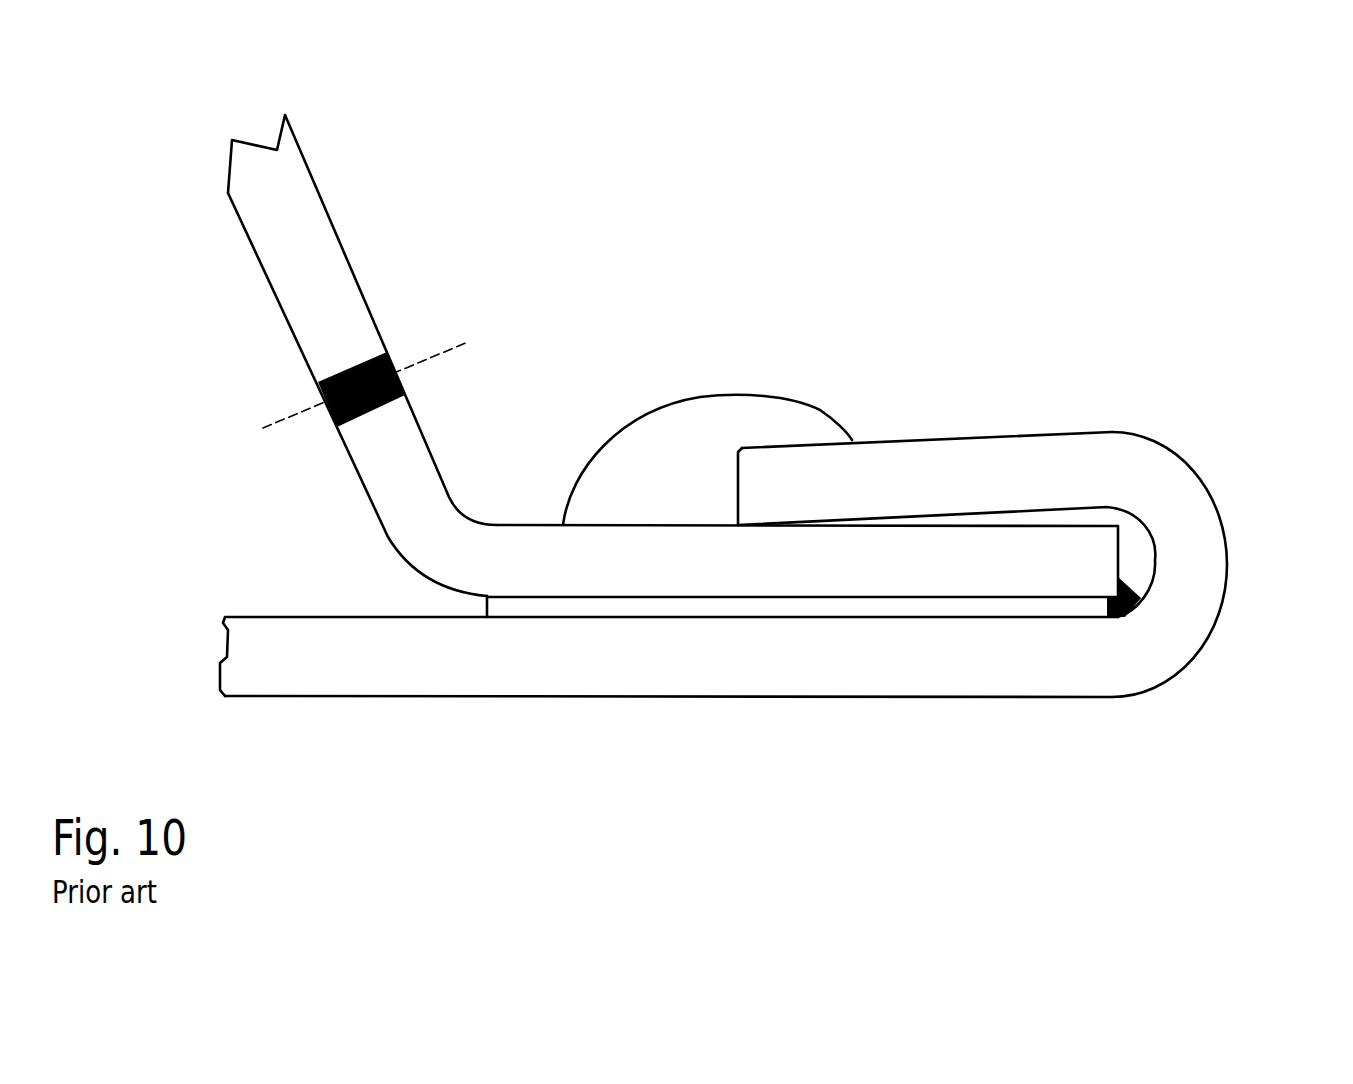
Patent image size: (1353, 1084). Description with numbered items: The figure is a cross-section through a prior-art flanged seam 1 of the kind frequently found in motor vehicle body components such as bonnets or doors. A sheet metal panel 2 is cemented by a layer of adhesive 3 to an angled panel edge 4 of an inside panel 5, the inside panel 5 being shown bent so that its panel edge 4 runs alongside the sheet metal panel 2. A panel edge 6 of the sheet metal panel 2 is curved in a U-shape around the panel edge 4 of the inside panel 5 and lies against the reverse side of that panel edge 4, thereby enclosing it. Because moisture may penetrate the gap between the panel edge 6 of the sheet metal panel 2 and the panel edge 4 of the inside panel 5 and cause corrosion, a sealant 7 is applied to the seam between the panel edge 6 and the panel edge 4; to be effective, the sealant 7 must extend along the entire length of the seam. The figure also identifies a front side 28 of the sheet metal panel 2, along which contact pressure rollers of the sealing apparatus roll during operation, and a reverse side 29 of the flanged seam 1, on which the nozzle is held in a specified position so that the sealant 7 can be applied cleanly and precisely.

The flanged seam 1 is at (1233, 343).
The sheet metal panel 2 is at (308, 668).
The layer of adhesive 3 is at (652, 607).
The panel edge 4 is at (858, 558).
The inside panel 5 is at (298, 228).
The panel edge 6 is at (1022, 467).
The sealant 7 is at (660, 442).
The front side 28 is at (540, 697).
The reverse side 29 is at (965, 423).